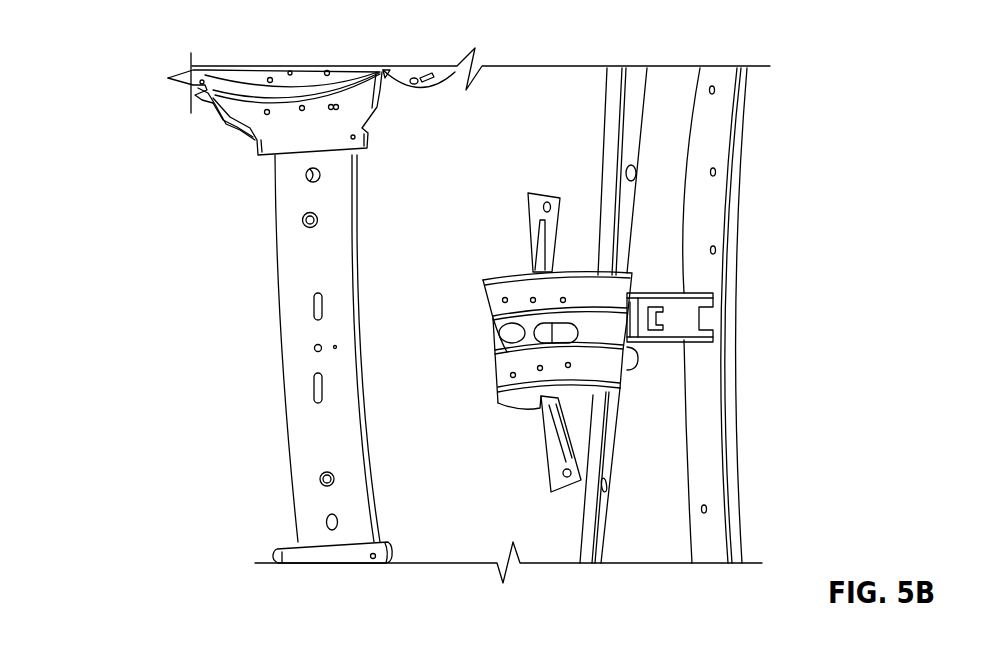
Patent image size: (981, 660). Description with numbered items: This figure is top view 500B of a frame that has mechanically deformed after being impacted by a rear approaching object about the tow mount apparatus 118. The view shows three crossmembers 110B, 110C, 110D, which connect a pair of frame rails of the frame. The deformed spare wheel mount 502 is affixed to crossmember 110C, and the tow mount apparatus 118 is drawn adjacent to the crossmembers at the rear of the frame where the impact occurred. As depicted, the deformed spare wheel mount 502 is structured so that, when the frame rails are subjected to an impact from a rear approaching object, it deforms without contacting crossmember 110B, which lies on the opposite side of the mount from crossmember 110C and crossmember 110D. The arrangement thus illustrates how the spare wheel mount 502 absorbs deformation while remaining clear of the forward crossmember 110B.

The top view 500B is at (149, 80).
The crossmember 110B is at (313, 350).
The crossmember 110C is at (623, 83).
The crossmember 110D is at (728, 232).
The deformed spare wheel mount 502 is at (505, 350).
The tow mount apparatus 118 is at (673, 327).